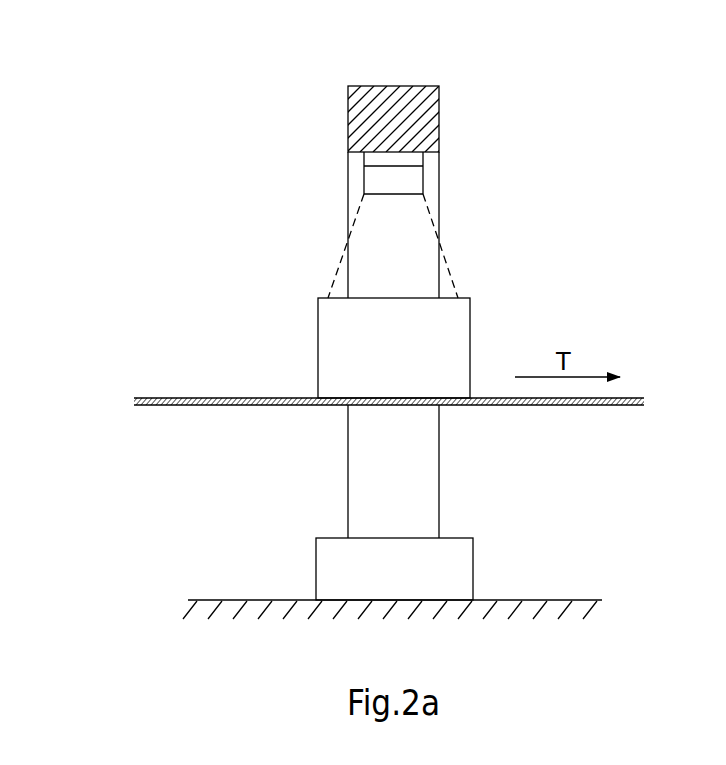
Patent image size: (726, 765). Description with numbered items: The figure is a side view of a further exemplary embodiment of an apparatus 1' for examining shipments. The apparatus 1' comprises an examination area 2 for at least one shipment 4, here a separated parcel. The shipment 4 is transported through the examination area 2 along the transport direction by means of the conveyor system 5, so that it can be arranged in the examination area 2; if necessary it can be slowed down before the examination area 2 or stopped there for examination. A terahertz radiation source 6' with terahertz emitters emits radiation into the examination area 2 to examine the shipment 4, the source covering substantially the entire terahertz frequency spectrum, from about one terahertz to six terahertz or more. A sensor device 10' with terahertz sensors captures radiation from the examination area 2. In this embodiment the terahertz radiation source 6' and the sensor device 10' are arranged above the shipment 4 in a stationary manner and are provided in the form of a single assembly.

The apparatus 1' is at (383, 304).
The sensor device 10' is at (415, 122).
The examination area 2 is at (318, 220).
The terahertz radiation source 6' is at (434, 184).
The shipment 4 is at (401, 363).
The conveyor system 5 is at (218, 397).